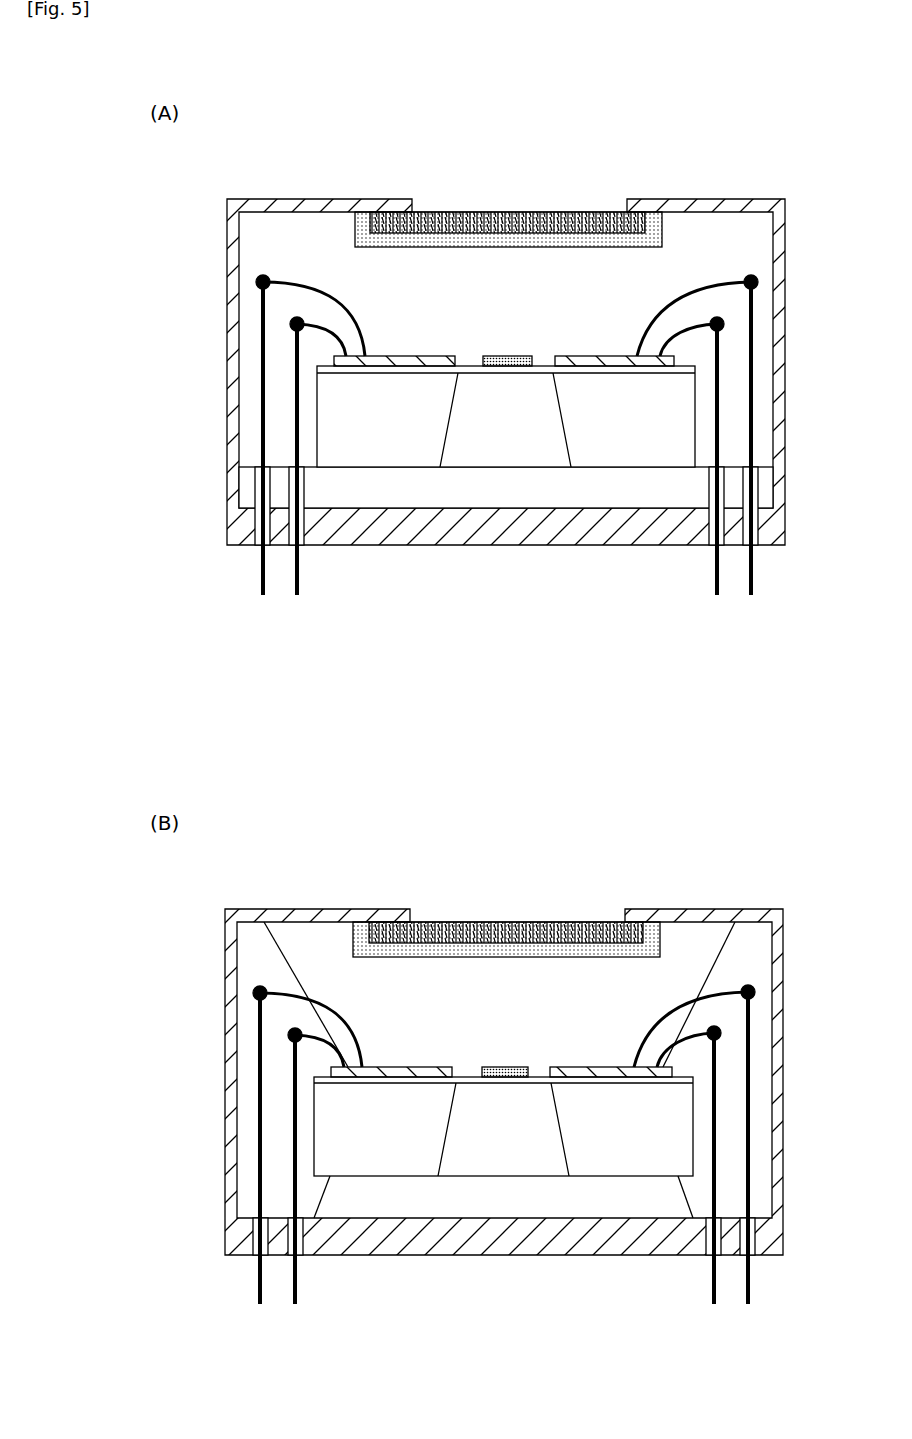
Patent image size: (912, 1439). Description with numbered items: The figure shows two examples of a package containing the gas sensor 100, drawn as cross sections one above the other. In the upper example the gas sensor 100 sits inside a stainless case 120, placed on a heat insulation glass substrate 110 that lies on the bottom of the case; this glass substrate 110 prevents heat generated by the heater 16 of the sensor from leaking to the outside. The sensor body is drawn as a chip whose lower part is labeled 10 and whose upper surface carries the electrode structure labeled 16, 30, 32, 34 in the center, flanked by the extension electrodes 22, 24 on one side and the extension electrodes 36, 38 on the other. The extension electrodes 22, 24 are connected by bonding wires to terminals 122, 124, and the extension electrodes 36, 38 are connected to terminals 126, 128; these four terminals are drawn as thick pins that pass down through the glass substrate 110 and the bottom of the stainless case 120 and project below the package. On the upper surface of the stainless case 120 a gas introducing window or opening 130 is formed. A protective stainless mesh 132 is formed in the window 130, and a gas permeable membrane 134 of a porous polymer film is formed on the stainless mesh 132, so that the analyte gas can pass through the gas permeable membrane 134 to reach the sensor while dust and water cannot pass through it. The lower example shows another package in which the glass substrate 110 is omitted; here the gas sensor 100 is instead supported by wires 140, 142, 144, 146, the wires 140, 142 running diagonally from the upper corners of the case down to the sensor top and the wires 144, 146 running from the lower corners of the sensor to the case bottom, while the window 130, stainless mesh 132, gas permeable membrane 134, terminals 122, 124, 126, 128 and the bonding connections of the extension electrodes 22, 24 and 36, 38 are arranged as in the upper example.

The semiconductor substrate (chip) 10 is at (452, 415).
The heater 16 is at (507, 682).
The extension electrode 22 is at (393, 694).
The extension electrode 24 is at (398, 355).
The gate insulating film 30 is at (507, 682).
The gate electrode 32 is at (507, 682).
The gate wiring 34 is at (503, 355).
The extension electrode 36 is at (612, 694).
The extension electrode 38 is at (591, 355).
The gas sensor 100 is at (378, 293).
The heat insulation glass substrate 110 is at (400, 490).
The stainless case 120 is at (522, 548).
The terminal 122 is at (297, 598).
The terminal 124 is at (263, 598).
The terminal 126 is at (717, 598).
The terminal 128 is at (751, 598).
The gas introducing window 130 is at (507, 534).
The protective stainless mesh 132 is at (553, 210).
The gas permeable membrane 134 is at (662, 238).
The wire 140 is at (701, 977).
The wire 142 is at (310, 955).
The wire 144 is at (680, 1195).
The wire 146 is at (322, 1201).